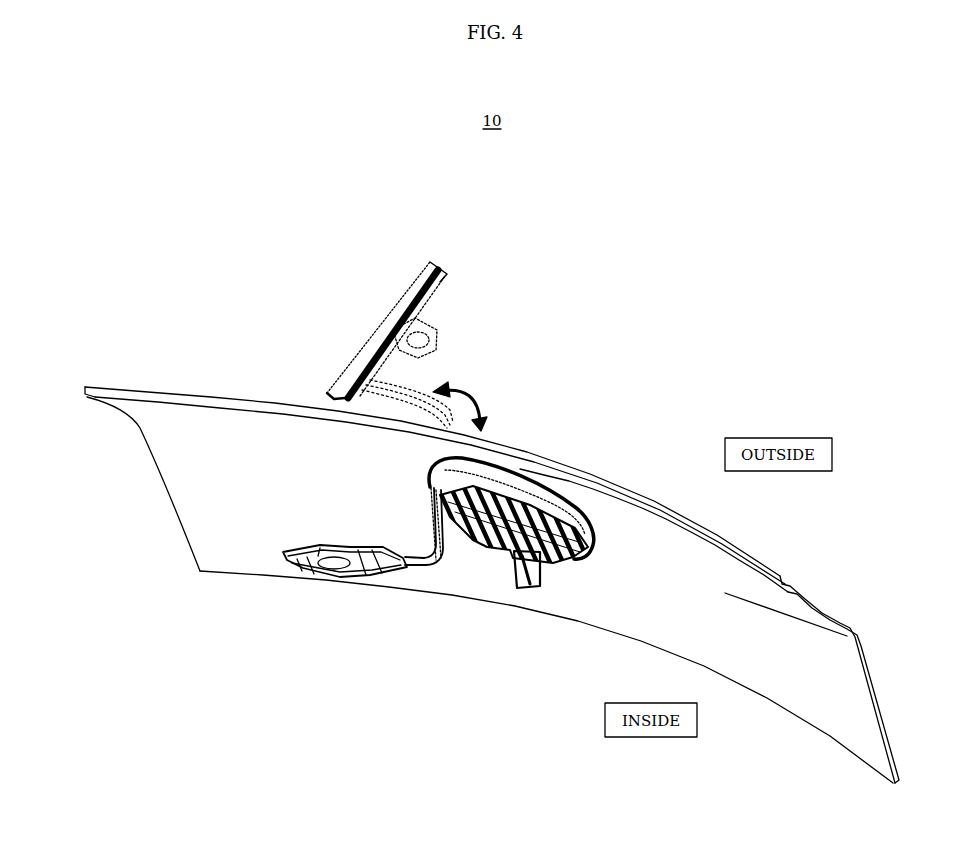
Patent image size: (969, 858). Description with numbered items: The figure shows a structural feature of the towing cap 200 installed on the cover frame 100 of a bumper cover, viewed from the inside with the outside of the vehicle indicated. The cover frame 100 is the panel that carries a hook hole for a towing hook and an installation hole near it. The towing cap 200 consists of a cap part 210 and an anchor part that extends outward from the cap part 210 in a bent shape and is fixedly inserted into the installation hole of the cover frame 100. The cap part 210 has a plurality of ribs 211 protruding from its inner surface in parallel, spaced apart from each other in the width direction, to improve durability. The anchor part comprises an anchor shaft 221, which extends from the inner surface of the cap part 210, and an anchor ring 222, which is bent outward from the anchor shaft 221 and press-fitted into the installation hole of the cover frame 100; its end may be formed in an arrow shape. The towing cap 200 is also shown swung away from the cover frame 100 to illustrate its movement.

The cover frame 100 is at (196, 440).
The towing cap 200 is at (333, 350).
The cap part 210 is at (532, 504).
The ribs 211 is at (534, 589).
The anchor shaft 221 is at (411, 558).
The anchor ring 222 is at (329, 543).